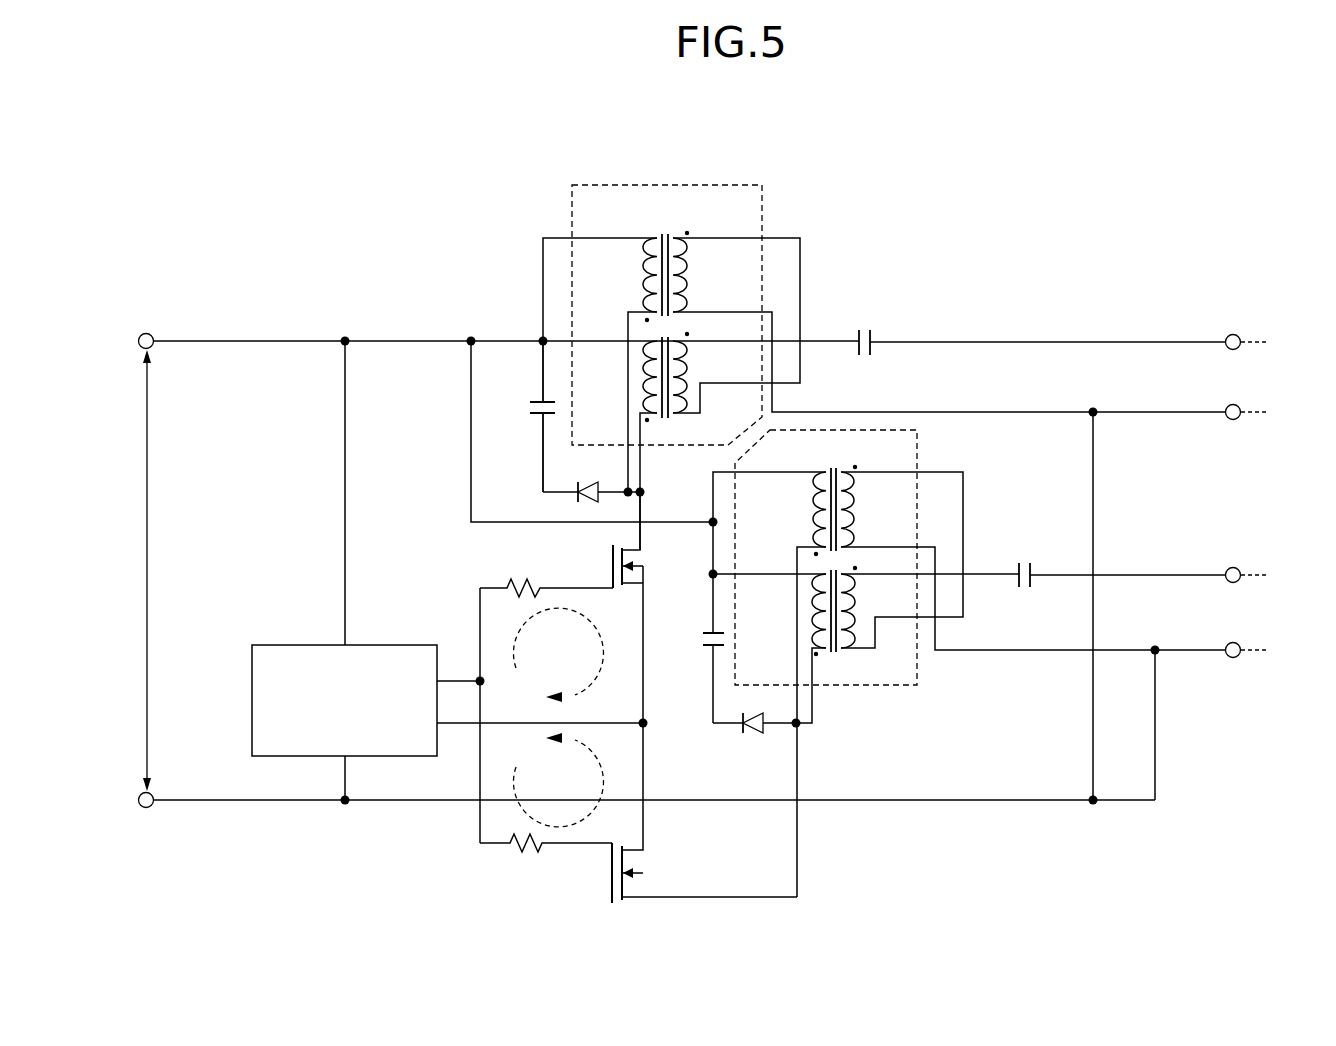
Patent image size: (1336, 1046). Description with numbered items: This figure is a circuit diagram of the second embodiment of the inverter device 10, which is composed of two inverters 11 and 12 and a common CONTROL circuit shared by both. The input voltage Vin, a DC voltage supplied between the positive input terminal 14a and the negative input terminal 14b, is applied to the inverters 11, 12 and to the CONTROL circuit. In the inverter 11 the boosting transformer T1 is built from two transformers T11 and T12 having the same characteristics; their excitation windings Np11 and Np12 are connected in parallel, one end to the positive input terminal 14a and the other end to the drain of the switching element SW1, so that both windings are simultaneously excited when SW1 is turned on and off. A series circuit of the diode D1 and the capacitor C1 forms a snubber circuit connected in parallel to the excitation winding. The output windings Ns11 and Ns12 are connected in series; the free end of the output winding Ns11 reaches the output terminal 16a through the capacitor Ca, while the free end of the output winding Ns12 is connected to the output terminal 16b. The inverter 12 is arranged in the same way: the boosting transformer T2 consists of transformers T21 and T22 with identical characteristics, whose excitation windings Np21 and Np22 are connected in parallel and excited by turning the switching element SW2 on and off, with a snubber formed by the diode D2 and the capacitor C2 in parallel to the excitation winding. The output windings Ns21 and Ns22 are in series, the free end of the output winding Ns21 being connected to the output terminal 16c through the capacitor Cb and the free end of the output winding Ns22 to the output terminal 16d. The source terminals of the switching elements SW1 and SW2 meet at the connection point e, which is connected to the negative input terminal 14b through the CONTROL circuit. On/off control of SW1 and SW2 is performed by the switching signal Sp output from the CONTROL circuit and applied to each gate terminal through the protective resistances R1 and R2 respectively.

The inverter device 10 is at (440, 173).
The inverter 11 is at (880, 272).
The inverter 12 is at (997, 513).
The positive input terminal 14a is at (147, 333).
The negative input terminal 14b is at (147, 808).
The output terminal 16a is at (1235, 334).
The output terminal 16b is at (1235, 420).
The output terminal 16c is at (1235, 567).
The output terminal 16d is at (1235, 658).
The boosting transformer T1 is at (668, 185).
The boosting transformer T2 is at (855, 686).
The transformer T11 is at (660, 441).
The transformer T12 is at (884, 350).
The transformer T21 is at (866, 644).
The transformer T22 is at (968, 672).
The excitation winding Np11 is at (618, 445).
The excitation winding Np12 is at (600, 365).
The output winding Ns11 is at (706, 372).
The output winding Ns12 is at (949, 322).
The excitation winding Np21 is at (769, 648).
The excitation winding Np22 is at (768, 684).
The output winding Ns21 is at (930, 607).
The output winding Ns22 is at (1033, 557).
The capacitor C1 is at (528, 415).
The capacitor C2 is at (698, 678).
The capacitor Ca is at (1041, 330).
The capacitor Cb is at (1121, 562).
The diode D1 is at (594, 482).
The diode D2 is at (757, 713).
The protective resistance R1 is at (546, 700).
The protective resistance R2 is at (546, 859).
The switching element SW1 is at (578, 607).
The switching element SW2 is at (655, 813).
The switching signal Sp is at (461, 671).
The connection point e is at (553, 723).
The input voltage Vin is at (146, 570).
The control circuit CONTROL is at (344, 700).